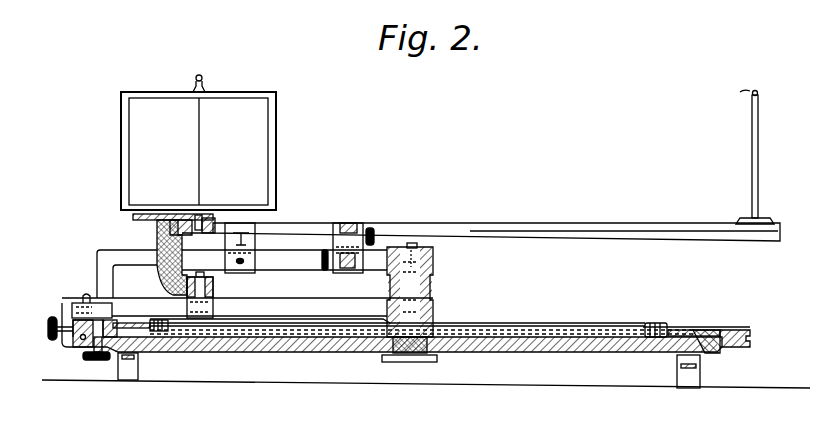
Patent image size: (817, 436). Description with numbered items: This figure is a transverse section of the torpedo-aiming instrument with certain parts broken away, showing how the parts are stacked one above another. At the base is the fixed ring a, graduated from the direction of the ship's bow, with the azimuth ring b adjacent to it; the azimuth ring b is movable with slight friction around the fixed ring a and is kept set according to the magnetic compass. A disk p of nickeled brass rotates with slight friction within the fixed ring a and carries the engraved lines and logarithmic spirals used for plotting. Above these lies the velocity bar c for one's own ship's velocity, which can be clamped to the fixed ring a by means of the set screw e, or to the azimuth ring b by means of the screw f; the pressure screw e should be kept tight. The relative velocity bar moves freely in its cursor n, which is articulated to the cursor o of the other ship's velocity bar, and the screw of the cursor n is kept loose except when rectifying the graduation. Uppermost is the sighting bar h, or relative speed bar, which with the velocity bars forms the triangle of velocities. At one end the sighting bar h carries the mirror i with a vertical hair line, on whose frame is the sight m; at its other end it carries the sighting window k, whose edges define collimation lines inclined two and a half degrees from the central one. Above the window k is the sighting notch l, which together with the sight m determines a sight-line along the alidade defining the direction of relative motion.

The fixed ring a is at (707, 330).
The azimuth ring b is at (738, 328).
The velocity bar c is at (247, 297).
The set screw e is at (96, 358).
The screw f is at (47, 325).
The sighting bar h is at (532, 222).
The mirror i is at (198, 151).
The sighting window k is at (758, 163).
The sighting notch l is at (741, 85).
The sight m is at (206, 80).
The cursor n is at (240, 247).
The cursor o is at (284, 248).
The disk p is at (563, 337).